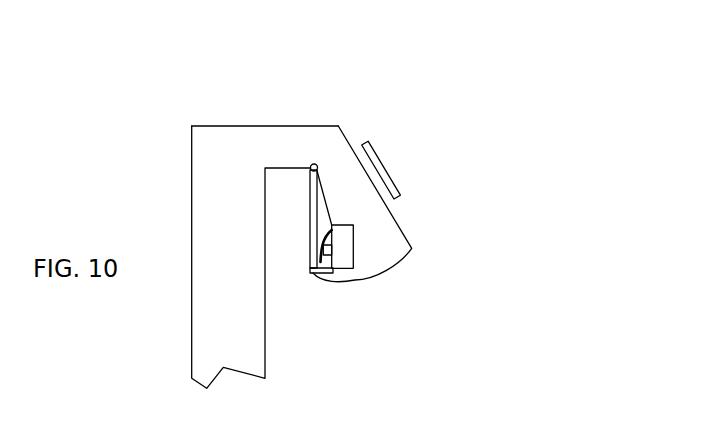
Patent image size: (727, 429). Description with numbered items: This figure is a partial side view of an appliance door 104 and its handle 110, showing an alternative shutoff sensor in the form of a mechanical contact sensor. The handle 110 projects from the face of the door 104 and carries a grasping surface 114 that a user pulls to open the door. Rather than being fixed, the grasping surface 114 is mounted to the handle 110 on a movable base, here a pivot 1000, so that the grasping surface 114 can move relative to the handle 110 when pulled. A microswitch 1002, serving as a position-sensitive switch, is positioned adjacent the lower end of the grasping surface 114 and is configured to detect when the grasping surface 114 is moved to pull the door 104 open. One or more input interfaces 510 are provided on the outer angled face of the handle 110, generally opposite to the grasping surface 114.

The door 104 is at (207, 202).
The handle 110 is at (395, 244).
The input interface 510 is at (385, 173).
The pivot 1000 is at (314, 164).
The grasping surface 114 is at (313, 245).
The microswitch 1002 is at (343, 252).